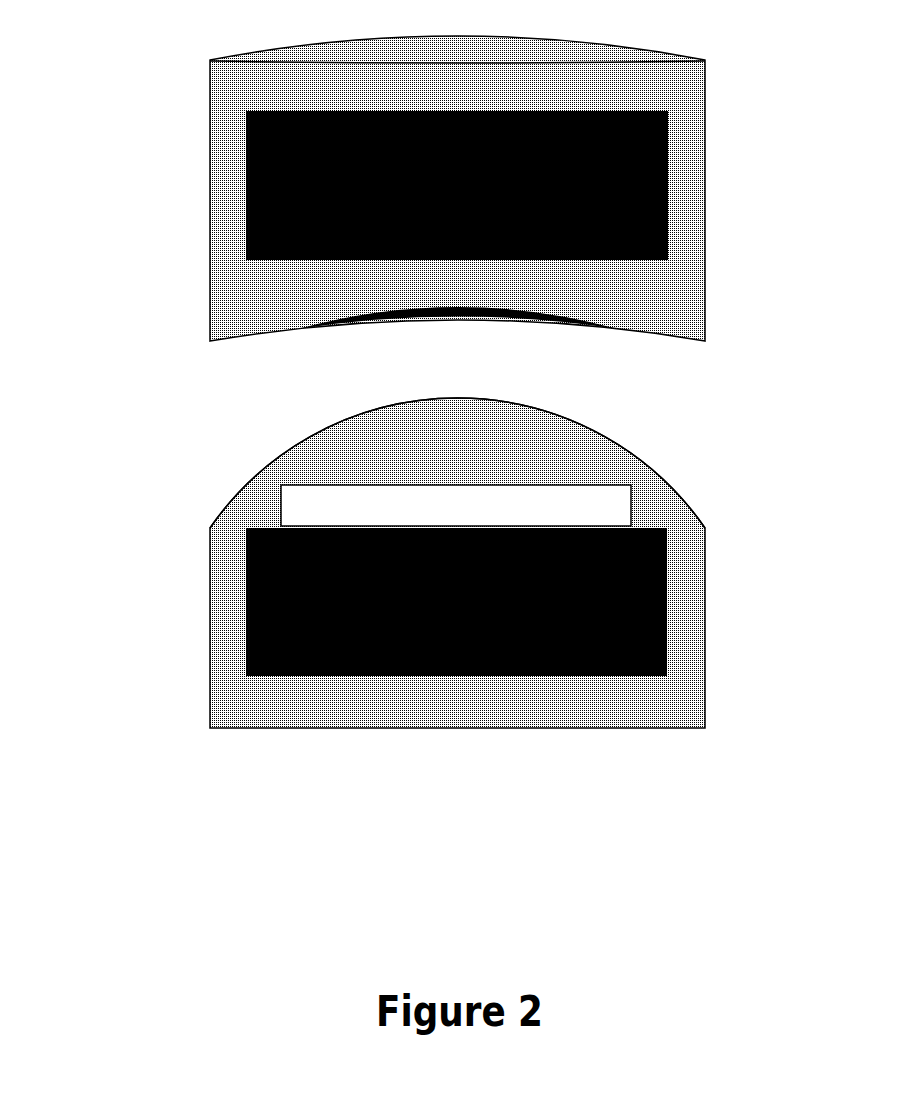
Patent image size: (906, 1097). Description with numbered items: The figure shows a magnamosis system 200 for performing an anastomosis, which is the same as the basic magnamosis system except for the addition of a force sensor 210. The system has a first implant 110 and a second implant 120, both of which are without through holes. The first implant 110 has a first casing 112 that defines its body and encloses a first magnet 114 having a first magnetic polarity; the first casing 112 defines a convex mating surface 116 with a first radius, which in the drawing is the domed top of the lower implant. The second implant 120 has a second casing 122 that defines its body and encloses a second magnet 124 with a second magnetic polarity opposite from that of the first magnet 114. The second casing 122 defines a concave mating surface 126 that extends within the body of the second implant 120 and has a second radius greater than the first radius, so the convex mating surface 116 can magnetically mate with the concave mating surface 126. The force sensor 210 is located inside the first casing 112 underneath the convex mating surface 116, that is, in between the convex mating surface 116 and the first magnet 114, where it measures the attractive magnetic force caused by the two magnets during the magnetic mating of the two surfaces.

The magnamosis system 200 is at (408, 462).
The second implant 120 is at (373, 211).
The second casing 122 is at (202, 92).
The second magnet 124 is at (471, 192).
The concave mating surface 126 is at (287, 362).
The convex mating surface 116 is at (629, 384).
The first implant 110 is at (408, 544).
The first casing 112 is at (202, 577).
The first magnet 114 is at (471, 611).
The force sensor 210 is at (471, 509).